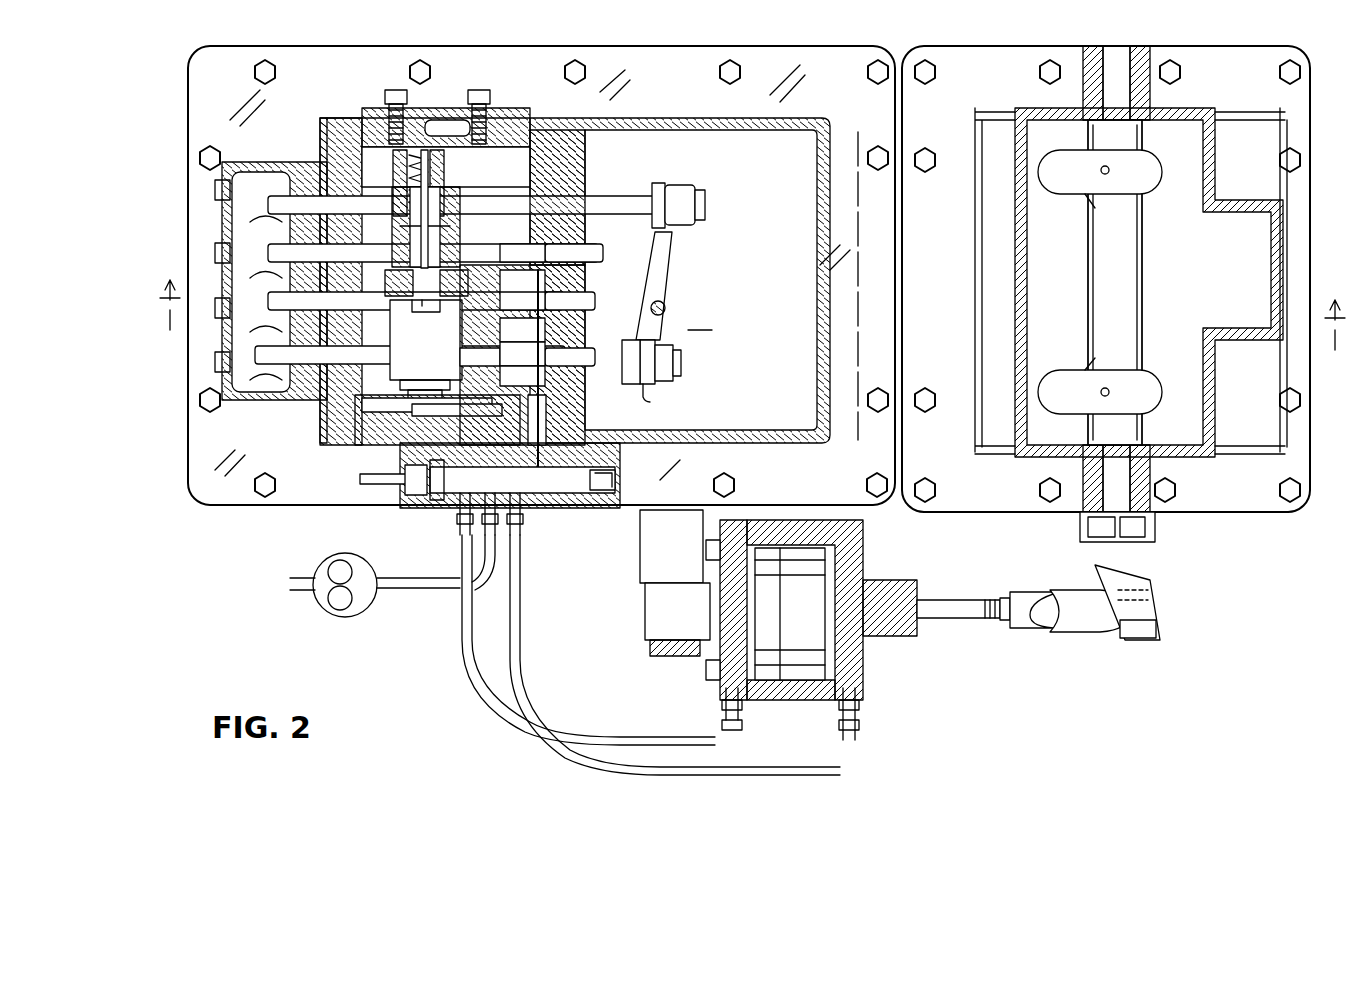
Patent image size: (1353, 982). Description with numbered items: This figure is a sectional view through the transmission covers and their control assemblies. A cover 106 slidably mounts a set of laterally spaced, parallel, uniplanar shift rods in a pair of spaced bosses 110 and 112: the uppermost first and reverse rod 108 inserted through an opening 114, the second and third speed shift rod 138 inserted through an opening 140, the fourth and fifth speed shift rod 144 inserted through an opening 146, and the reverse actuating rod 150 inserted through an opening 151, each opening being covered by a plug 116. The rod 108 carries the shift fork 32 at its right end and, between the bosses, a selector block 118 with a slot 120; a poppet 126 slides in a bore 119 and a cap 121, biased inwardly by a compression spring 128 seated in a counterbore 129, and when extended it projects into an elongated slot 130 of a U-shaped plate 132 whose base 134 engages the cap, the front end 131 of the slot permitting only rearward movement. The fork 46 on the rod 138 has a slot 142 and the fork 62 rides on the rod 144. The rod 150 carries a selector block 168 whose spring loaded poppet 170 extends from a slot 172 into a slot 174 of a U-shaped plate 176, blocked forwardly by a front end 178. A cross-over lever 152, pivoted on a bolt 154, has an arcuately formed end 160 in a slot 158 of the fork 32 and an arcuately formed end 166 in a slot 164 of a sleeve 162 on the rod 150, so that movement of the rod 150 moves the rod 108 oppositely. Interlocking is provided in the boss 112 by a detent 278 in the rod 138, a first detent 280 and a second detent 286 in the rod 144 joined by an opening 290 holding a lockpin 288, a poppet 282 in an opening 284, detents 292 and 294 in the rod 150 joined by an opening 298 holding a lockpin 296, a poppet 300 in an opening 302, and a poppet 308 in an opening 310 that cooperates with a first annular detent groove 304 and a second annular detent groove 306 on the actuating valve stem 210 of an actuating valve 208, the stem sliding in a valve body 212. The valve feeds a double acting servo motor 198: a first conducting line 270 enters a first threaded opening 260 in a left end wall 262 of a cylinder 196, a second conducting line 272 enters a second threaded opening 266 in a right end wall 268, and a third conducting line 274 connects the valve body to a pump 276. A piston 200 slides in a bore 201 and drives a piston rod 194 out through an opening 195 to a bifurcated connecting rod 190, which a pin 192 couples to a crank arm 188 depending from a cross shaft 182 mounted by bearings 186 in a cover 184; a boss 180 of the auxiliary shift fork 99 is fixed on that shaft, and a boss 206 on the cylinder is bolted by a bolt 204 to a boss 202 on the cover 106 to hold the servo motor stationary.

The cover 106 is at (655, 70).
The boss 112 is at (570, 160).
The boss 110 is at (305, 176).
The elongated slot 130 is at (445, 130).
The front end of slot 131 is at (420, 140).
The U-shaped plate 132 is at (495, 140).
The base of plate 134 is at (510, 160).
The first and reverse rod 108 is at (463, 205).
The second and third speed shift rod 138 is at (433, 253).
The fourth and fifth speed shift rod 144 is at (415, 301).
The reverse actuating rod 150 is at (410, 355).
The plug 116 is at (218, 192).
The opening 114 is at (259, 223).
The opening 140 is at (259, 280).
The opening 146 is at (250, 310).
The opening 151 is at (259, 383).
The cap 121 is at (395, 176).
The compression spring 128 is at (442, 180).
The selector block 118 is at (395, 206).
The counterbore 129 is at (442, 206).
The bore 119 is at (400, 226).
The poppet 126 is at (430, 248).
The shift fork 46 is at (392, 252).
The slot 120 is at (460, 257).
The slot 142 is at (390, 278).
The selector block 168 is at (426, 340).
The spring loaded poppet 170 is at (420, 312).
The slot 172 is at (430, 310).
The shift fork 62 is at (392, 328).
The slot 174 is at (438, 402).
The U-shaped plate 176 is at (365, 412).
The front end of slot 178 is at (440, 420).
The first detent 280 is at (572, 282).
The detent 278 is at (574, 254).
The lockpin 288 is at (570, 301).
The lockpin 296 is at (570, 357).
The poppet 282 is at (522, 254).
The opening 284 is at (510, 282).
The opening 290 is at (517, 301).
The second detent 286 is at (572, 333).
The opening 302 is at (515, 330).
The detent 292 is at (525, 348).
The opening 298 is at (518, 358).
The poppet 300 is at (548, 350).
The detent 294 is at (534, 382).
The poppet 308 is at (570, 400).
The opening 310 is at (548, 416).
The actuating valve stem 210 is at (514, 455).
The cross-over lever 152 is at (676, 268).
The shift fork 32 is at (655, 185).
The slot 158 is at (678, 186).
The arcuately formed end 160 is at (690, 200).
The bolt 154 is at (668, 305).
The arcuately formed end 166 is at (672, 360).
The sleeve 162 is at (678, 380).
The slot 164 is at (666, 399).
The actuating valve 208 is at (405, 512).
The valve body 212 is at (428, 505).
The first annular detent groove 304 is at (545, 505).
The second annular detent groove 306 is at (556, 500).
The pump 276 is at (325, 605).
The third conducting line 274 is at (410, 590).
The first conducting line 270 is at (565, 712).
The second conducting line 272 is at (535, 748).
The boss 202 is at (660, 548).
The boss 206 is at (655, 608).
The bolt 204 is at (676, 656).
The left end wall 262 is at (722, 528).
The cylinder 196 is at (862, 535).
The opening 195 is at (880, 600).
The piston 200 is at (820, 605).
The bore 201 is at (773, 675).
The right end wall 268 is at (860, 655).
The first threaded opening 260 is at (722, 700).
The second threaded opening 266 is at (840, 708).
The double acting servo motor 198 is at (907, 703).
The piston rod 194 is at (975, 605).
The bifurcated connecting rod 190 is at (1032, 628).
The pin 192 is at (1133, 640).
The crank arm 188 is at (1148, 578).
The cover 184 is at (1238, 65).
The auxiliary shift fork 99 is at (1180, 298).
The cross shaft 182 is at (1115, 70).
The bearings 186 is at (1085, 70).
The boss 180 is at (1090, 300).